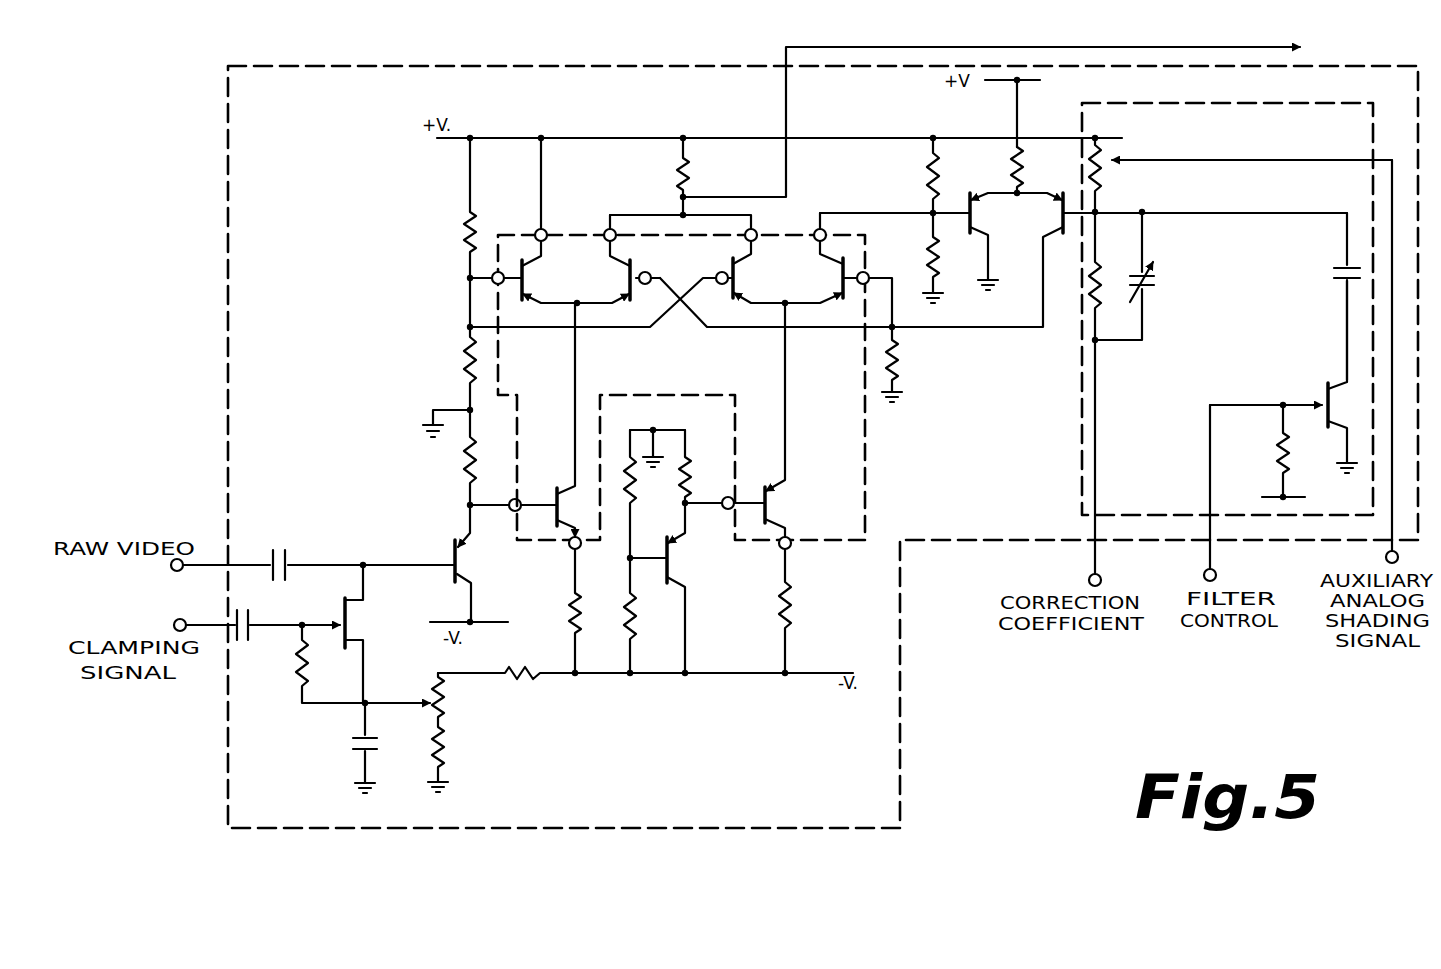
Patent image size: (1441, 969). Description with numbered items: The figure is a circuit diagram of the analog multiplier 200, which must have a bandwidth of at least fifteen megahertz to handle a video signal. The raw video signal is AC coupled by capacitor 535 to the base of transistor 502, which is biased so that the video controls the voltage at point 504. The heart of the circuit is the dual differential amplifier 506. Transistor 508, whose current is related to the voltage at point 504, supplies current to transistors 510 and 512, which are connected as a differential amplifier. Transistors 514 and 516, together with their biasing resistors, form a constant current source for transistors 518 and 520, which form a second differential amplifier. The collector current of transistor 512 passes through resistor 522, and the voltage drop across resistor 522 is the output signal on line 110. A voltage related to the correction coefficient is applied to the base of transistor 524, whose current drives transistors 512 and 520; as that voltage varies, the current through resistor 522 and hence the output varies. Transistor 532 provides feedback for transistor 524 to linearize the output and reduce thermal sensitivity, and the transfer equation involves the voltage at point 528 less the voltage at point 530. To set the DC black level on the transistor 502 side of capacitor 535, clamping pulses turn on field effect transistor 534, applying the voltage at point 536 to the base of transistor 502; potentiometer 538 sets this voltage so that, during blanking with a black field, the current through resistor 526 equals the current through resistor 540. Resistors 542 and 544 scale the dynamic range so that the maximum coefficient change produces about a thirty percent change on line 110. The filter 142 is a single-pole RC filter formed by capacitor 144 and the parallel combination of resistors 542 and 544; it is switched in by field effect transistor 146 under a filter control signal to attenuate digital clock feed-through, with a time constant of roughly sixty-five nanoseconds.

The line 110 is at (1253, 47).
The filter 142 is at (1273, 101).
The capacitor 144 is at (1335, 268).
The field effect transistor 146 is at (1325, 385).
The multiplier 200 is at (226, 297).
The transistor 502 is at (462, 562).
The point 504 is at (467, 503).
The dual differential amplifier 506 is at (868, 486).
The transistor 508 is at (553, 488).
The transistor 510 is at (530, 292).
The transistor 512 is at (641, 273).
The transistor 514 is at (672, 562).
The transistor 516 is at (783, 513).
The transistor 518 is at (804, 270).
The transistor 520 is at (909, 220).
The resistor 522 is at (690, 176).
The transistor 524 is at (1040, 169).
The resistor 526 is at (567, 610).
The point 528 is at (895, 338).
The point 530 is at (470, 329).
The transistor 532 is at (1158, 241).
The field effect transistor 534 is at (366, 620).
The capacitor 535 is at (282, 548).
The point 536 is at (360, 708).
The potentiometer 538 is at (452, 703).
The resistor 540 is at (797, 618).
The resistor 542 is at (1108, 182).
The resistor 544 is at (1092, 300).